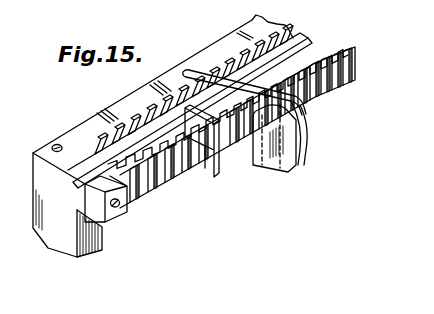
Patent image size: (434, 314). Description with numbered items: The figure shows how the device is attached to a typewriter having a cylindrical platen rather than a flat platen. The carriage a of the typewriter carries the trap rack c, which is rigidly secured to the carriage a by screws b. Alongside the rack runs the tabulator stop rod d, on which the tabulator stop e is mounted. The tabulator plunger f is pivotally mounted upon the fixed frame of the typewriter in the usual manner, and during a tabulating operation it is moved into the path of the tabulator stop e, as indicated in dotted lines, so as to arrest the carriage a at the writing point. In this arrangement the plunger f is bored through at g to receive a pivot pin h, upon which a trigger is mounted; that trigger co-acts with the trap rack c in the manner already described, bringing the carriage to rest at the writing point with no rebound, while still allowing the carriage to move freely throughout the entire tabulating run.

The carriage a is at (80, 205).
The screws b is at (58, 144).
The trap rack c is at (127, 104).
The tabulator stop rod d is at (172, 177).
The tabulator stop e is at (216, 178).
The tabulator plunger f is at (290, 163).
The bore g is at (304, 125).
The pivot pin h is at (305, 108).